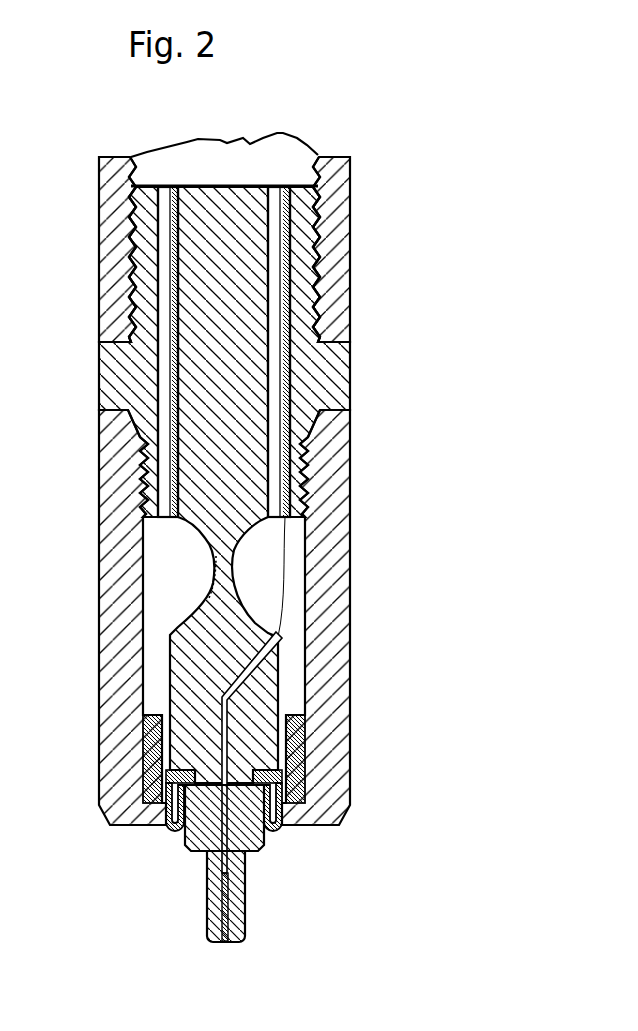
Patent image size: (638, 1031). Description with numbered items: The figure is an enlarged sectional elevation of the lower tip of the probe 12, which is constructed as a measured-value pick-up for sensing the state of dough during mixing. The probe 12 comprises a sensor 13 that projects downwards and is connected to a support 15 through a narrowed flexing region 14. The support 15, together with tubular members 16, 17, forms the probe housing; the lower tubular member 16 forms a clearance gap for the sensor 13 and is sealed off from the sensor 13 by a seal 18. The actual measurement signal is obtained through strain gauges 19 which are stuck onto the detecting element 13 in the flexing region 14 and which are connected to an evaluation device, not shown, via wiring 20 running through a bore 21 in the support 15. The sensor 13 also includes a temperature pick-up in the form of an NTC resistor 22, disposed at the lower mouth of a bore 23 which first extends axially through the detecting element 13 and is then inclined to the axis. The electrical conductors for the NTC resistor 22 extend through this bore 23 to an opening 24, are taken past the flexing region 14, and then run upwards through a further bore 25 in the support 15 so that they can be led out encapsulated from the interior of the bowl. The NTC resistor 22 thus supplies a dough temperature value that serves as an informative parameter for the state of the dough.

The probe 12 is at (380, 164).
The sensor 13 is at (185, 881).
The narrowed flexing region 14 is at (232, 567).
The support 15 is at (122, 383).
The tubular member 16 is at (117, 513).
The tubular member 17 is at (117, 234).
The seal 18 is at (157, 763).
The strain gauges 19 is at (207, 580).
The wiring 20 is at (197, 533).
The bore 21 is at (163, 357).
The NTC resistor 22 is at (223, 943).
The bore 23 is at (243, 860).
The opening 24 is at (283, 643).
The further bore 25 is at (337, 460).